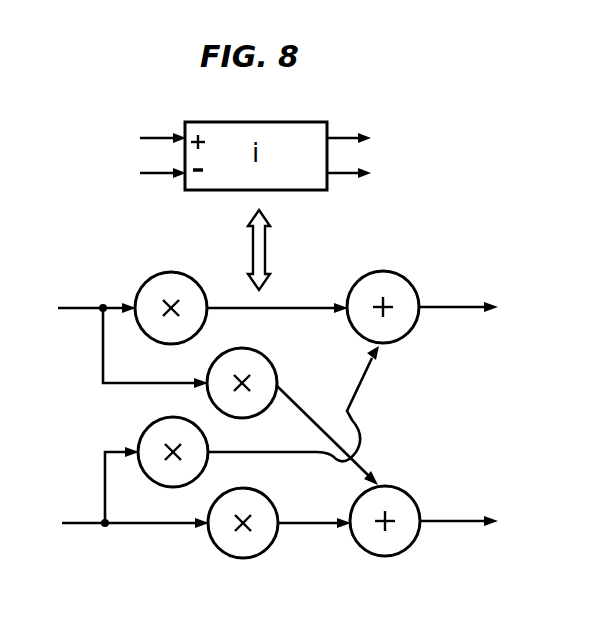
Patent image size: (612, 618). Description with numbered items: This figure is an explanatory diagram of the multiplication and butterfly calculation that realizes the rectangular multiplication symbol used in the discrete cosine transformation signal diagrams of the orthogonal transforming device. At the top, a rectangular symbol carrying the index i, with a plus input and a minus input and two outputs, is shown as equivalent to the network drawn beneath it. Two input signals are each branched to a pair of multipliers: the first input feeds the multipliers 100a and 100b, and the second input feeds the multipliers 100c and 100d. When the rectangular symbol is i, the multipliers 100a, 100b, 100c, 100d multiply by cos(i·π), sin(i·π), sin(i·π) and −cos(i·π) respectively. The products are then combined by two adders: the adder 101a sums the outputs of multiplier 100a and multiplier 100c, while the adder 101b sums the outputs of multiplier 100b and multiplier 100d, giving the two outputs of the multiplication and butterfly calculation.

The multiplier 100a is at (149, 277).
The multiplier 100b is at (275, 365).
The multiplier 100c is at (152, 422).
The multiplier 100d is at (217, 548).
The adder 101a is at (399, 275).
The adder 101b is at (402, 489).